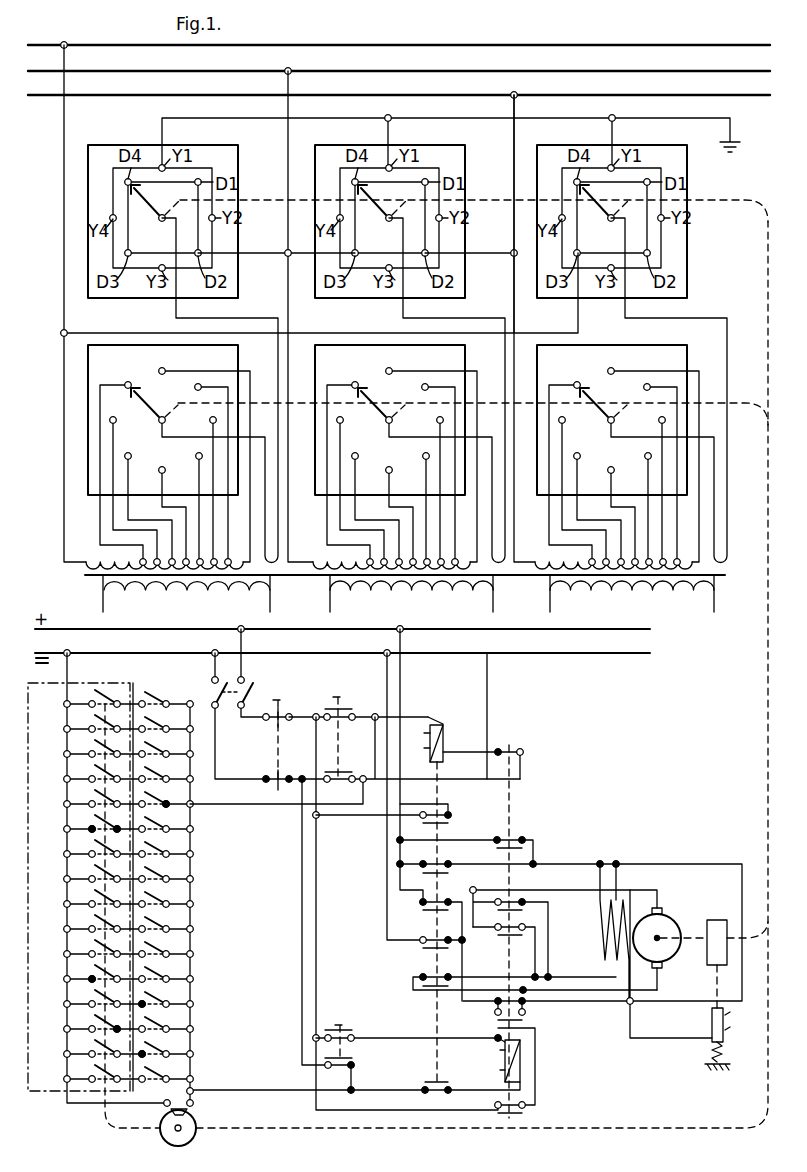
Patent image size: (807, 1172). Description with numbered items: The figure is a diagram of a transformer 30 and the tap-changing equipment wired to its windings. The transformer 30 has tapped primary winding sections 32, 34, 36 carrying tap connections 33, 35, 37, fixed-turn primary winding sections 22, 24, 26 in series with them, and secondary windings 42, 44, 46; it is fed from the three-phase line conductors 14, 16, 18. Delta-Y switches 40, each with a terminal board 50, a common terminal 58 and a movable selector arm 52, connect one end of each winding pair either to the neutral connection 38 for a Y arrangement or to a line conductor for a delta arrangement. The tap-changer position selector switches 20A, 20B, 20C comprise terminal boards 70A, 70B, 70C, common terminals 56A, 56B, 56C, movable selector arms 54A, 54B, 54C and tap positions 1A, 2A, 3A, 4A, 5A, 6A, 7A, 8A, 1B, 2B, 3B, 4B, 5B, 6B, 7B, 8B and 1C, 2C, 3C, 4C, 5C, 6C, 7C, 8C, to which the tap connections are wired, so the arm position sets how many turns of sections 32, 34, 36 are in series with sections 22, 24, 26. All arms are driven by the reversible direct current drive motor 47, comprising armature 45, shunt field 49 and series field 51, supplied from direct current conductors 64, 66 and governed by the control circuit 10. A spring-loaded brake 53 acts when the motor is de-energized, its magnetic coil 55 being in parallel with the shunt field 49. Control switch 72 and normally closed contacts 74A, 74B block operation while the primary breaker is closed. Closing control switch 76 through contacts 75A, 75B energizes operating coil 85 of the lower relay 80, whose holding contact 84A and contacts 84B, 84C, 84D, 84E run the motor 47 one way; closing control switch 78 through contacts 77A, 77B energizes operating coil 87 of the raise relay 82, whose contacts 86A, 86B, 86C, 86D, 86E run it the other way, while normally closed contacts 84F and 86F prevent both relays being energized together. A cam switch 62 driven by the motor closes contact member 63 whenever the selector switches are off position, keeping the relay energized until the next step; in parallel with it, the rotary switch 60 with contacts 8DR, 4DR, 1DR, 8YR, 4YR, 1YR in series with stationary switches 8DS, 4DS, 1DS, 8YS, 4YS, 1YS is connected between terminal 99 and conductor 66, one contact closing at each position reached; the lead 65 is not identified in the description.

The tap-changer control circuit 10 is at (228, 1150).
The line conductor 14 is at (76, 52).
The line conductor 16 is at (76, 78).
The line conductor 18 is at (76, 102).
The tap-changer position selector switch 20A is at (174, 393).
The tap-changer position selector switch 20B is at (401, 393).
The tap-changer position selector switch 20C is at (623, 393).
The primary winding section 22 is at (281, 580).
The primary winding section 24 is at (507, 580).
The primary winding section 26 is at (727, 570).
The transformer 30 is at (80, 590).
The primary winding section 32 is at (100, 560).
The tap connections 33 is at (230, 562).
The primary winding section 34 is at (384, 552).
The tap connections 35 is at (466, 550).
The primary winding section 36 is at (606, 552).
The tap connections 37 is at (688, 550).
The neutral connection 38 is at (634, 118).
The delta-Y switch 40 is at (262, 141).
The secondary winding 42 is at (130, 588).
The secondary winding 44 is at (370, 586).
The secondary winding 46 is at (590, 585).
The armature 45 is at (666, 926).
The drive motor 47 is at (683, 994).
The shunt field 49 is at (620, 926).
The terminal board 50 is at (238, 298).
The series field 51 is at (599, 957).
The movable selector arm 52 is at (159, 220).
The brake 53 is at (699, 1032).
The movable selector arm 54A is at (157, 415).
The movable selector arm 54B is at (384, 403).
The movable selector arm 54C is at (606, 403).
The magnetic coil 55 is at (725, 1023).
The common terminal 56A is at (160, 438).
The common terminal 56B is at (425, 390).
The common terminal 56C is at (647, 390).
The common terminal 58 is at (162, 214).
The rotary switch 60 is at (195, 890).
The cam switch 62 is at (164, 1137).
The contact member 63 is at (194, 1106).
The direct current conductor 64 is at (650, 629).
The matrix output lead 65 is at (192, 955).
The direct current conductor 66 is at (650, 653).
The terminal board 70A is at (238, 348).
The terminal board 70B is at (409, 416).
The terminal board 70C is at (631, 416).
The control switch 72 is at (247, 692).
The normally closed contact 74A is at (272, 725).
The normally closed contact 74B is at (272, 776).
The contact 75A is at (340, 720).
The contact 75B is at (338, 778).
The control switch 76 is at (352, 688).
The normally open contact 77A is at (351, 1032).
The normally open contact 77B is at (351, 1062).
The control switch 78 is at (349, 1018).
The lower relay 80 is at (464, 714).
The raise relay 82 is at (565, 1066).
The holding contact 84A is at (441, 822).
The normally open contact 84B is at (441, 872).
The normally open contact 84C is at (423, 910).
The normally open contact 84D is at (423, 948).
The normally open contact 84E is at (423, 988).
The normally closed contact 84F is at (425, 1086).
The operating coil 85 is at (444, 741).
The holding contact 86A is at (509, 1118).
The normally open contact 86B is at (525, 1014).
The normally open contact 86C is at (499, 934).
The normally open contact 86D is at (502, 900).
The normally open contact 86E is at (512, 840).
The normally closed contact 86F is at (507, 752).
The operating coil 87 is at (498, 1050).
The terminal 99 is at (191, 806).
The tap position 1A is at (163, 370).
The tap position 2A is at (198, 386).
The tap position 3A is at (210, 420).
The tap position 4A is at (197, 459).
The tap position 5A is at (160, 474).
The tap position 6A is at (128, 455).
The tap position 7A is at (118, 414).
The tap position 8A is at (128, 384).
The tap position 1B is at (431, 456).
The tap position 2B is at (438, 456).
The tap position 3B is at (424, 486).
The tap position 4B is at (414, 507).
The tap position 5B is at (386, 514).
The tap position 6B is at (375, 503).
The tap position 7B is at (360, 485).
The tap position 8B is at (348, 458).
The tap position 1C is at (653, 456).
The tap position 2C is at (660, 456).
The tap position 3C is at (646, 486).
The tap position 4C is at (636, 507).
The tap position 5C is at (608, 514).
The tap position 6C is at (597, 503).
The tap position 7C is at (582, 485).
The tap position 8C is at (570, 458).
The rotary switch contact 8DR is at (92, 703).
The rotary switch contact 4DR is at (92, 803).
The rotary switch contact 1DR is at (92, 878).
The rotary switch contact 8YR is at (92, 903).
The rotary switch contact 4YR is at (92, 1003).
The rotary switch contact 1YR is at (92, 1078).
The stationary switch 8DS is at (178, 692).
The stationary switch 4DS is at (160, 801).
The stationary switch 1DS is at (160, 877).
The stationary switch 8YS is at (160, 902).
The stationary switch 4YS is at (160, 1002).
The stationary switch 1YS is at (160, 1077).